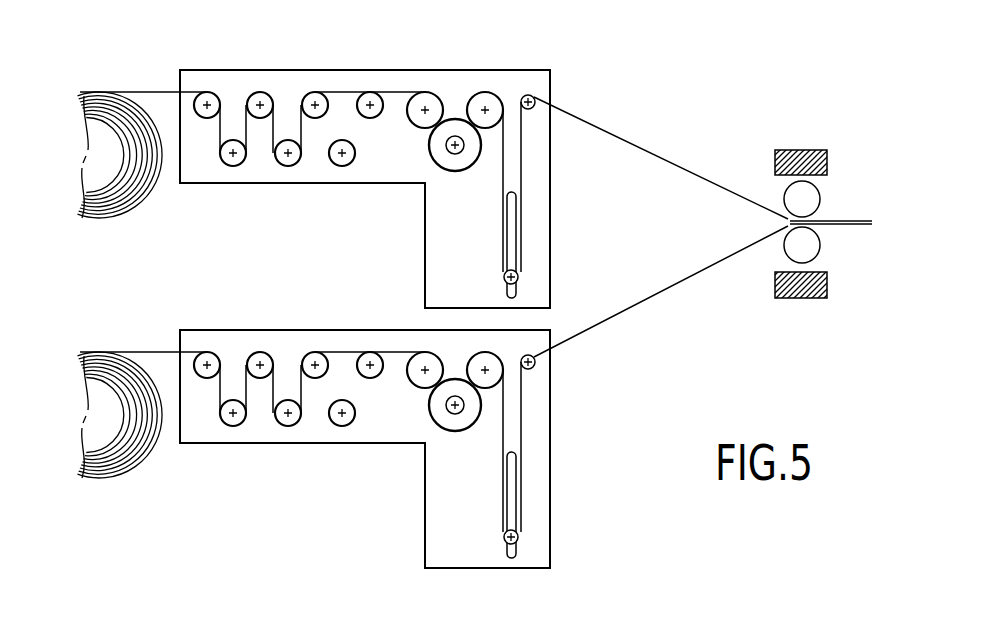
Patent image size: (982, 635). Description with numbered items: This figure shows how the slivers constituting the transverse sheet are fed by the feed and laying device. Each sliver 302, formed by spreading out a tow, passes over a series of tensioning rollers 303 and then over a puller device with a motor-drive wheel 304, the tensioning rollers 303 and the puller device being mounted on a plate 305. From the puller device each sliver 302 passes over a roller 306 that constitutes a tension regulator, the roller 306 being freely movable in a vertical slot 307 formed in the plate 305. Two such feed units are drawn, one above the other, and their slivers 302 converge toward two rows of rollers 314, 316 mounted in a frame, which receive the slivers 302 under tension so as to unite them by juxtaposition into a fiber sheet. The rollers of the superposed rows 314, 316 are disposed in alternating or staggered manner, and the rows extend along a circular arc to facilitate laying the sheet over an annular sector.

The sliver 302 is at (737, 253).
The tensioning rollers 303 is at (320, 93).
The motor-drive wheel 304 is at (455, 150).
The plate 305 is at (440, 252).
The roller 306 is at (517, 275).
The vertical slot 307 is at (510, 230).
The row of rollers 314 is at (806, 199).
The row of rollers 316 is at (805, 245).